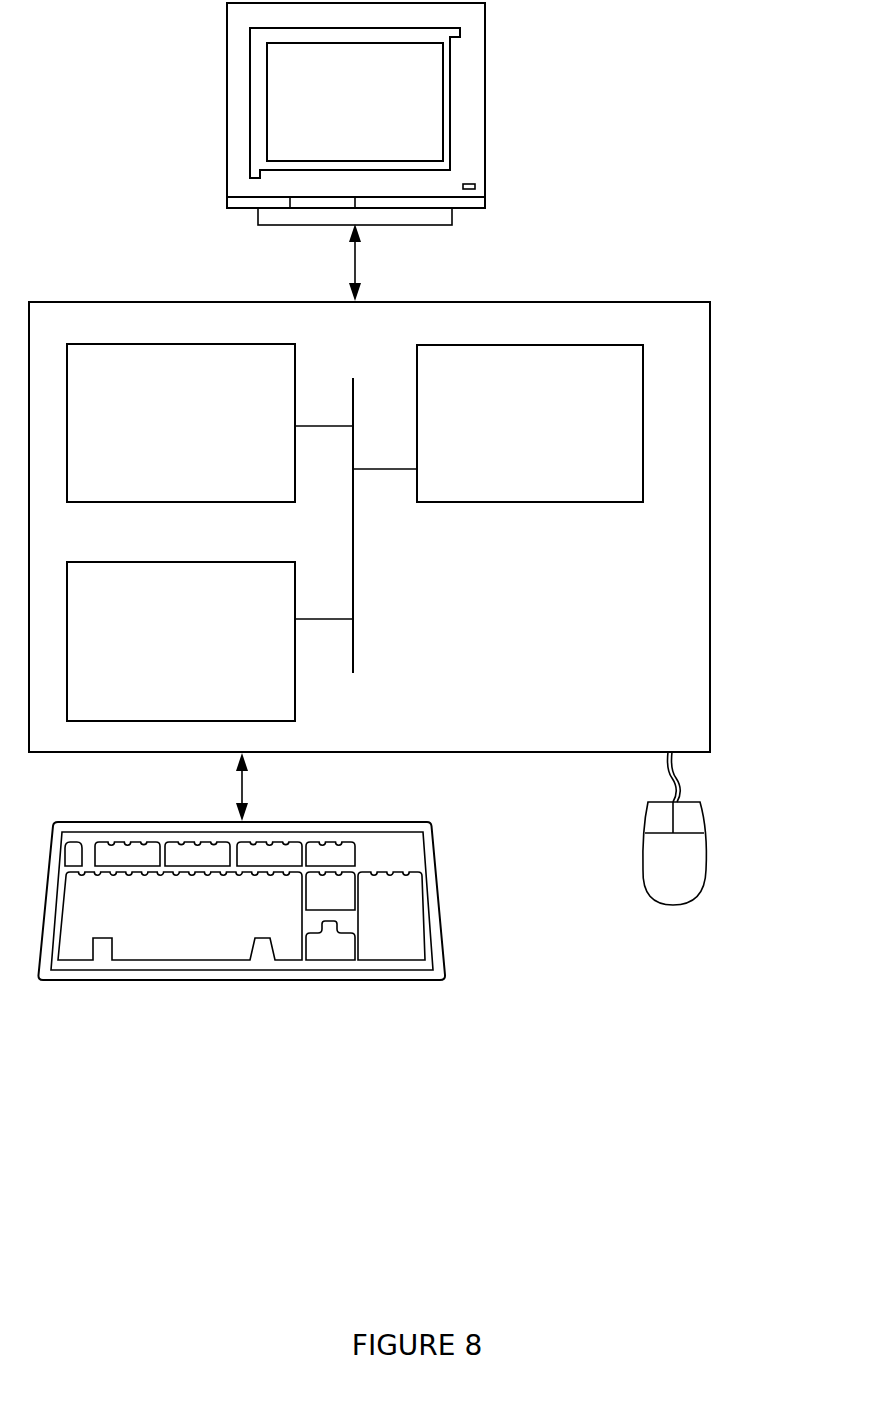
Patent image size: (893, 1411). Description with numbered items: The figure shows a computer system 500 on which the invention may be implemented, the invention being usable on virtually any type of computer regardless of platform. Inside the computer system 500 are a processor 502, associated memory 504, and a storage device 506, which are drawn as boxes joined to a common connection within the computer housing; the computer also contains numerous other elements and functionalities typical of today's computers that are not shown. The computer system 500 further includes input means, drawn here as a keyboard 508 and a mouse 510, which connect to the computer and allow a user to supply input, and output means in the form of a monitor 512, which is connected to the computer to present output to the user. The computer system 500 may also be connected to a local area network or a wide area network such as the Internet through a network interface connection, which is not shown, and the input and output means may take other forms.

The computer system 500 is at (684, 177).
The processor 502 is at (526, 434).
The associated memory 504 is at (160, 434).
The storage device 506 is at (156, 652).
The keyboard 508 is at (151, 939).
The mouse 510 is at (651, 872).
The monitor 512 is at (333, 117).